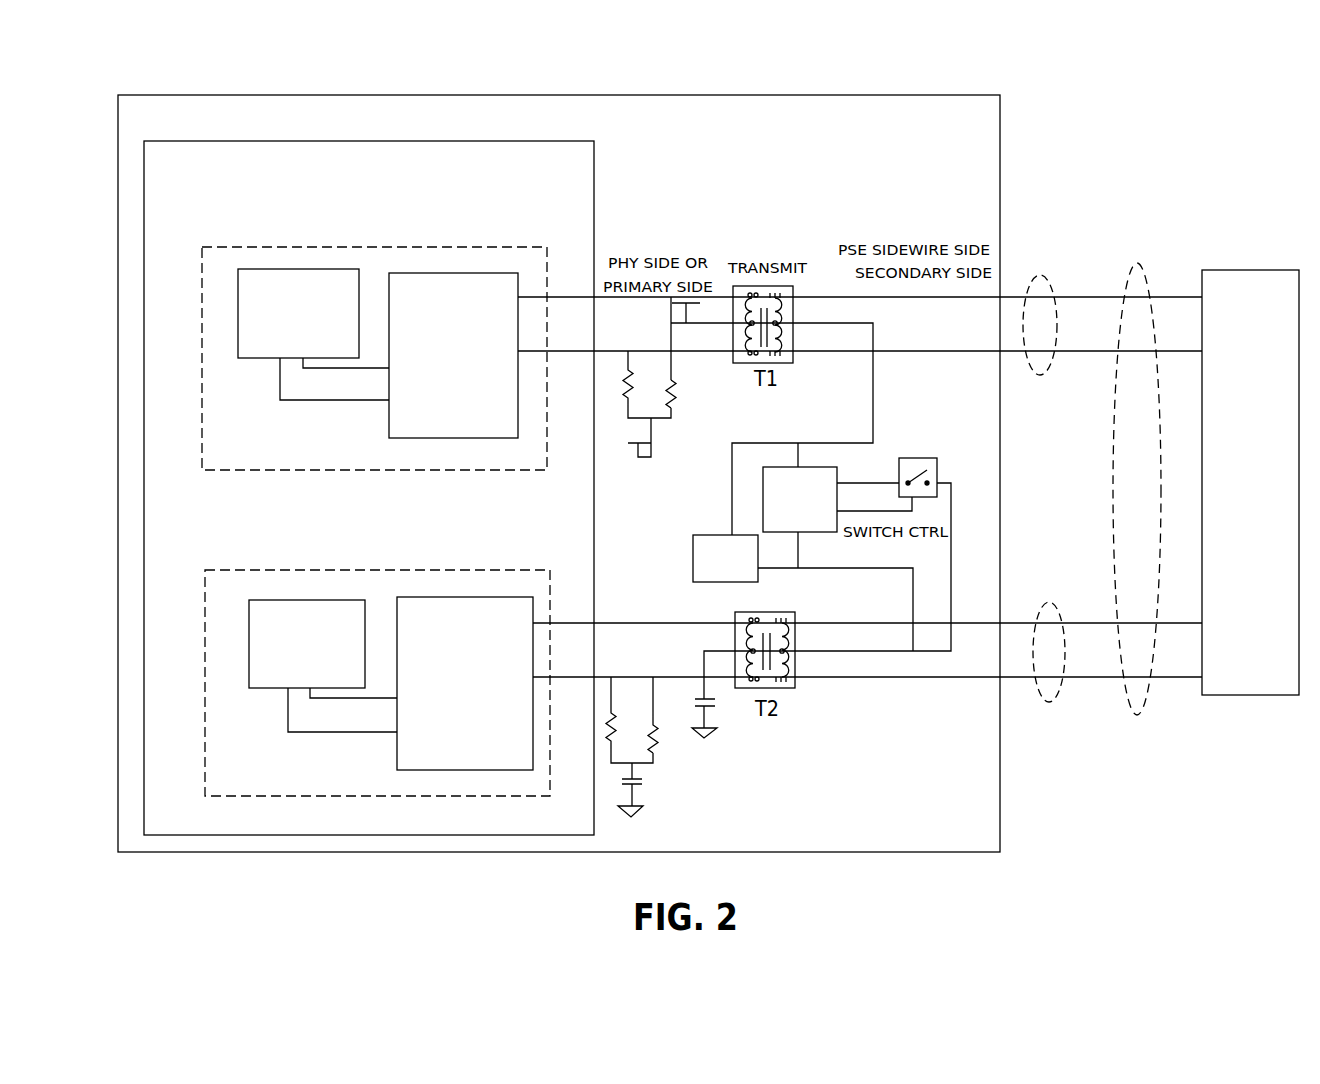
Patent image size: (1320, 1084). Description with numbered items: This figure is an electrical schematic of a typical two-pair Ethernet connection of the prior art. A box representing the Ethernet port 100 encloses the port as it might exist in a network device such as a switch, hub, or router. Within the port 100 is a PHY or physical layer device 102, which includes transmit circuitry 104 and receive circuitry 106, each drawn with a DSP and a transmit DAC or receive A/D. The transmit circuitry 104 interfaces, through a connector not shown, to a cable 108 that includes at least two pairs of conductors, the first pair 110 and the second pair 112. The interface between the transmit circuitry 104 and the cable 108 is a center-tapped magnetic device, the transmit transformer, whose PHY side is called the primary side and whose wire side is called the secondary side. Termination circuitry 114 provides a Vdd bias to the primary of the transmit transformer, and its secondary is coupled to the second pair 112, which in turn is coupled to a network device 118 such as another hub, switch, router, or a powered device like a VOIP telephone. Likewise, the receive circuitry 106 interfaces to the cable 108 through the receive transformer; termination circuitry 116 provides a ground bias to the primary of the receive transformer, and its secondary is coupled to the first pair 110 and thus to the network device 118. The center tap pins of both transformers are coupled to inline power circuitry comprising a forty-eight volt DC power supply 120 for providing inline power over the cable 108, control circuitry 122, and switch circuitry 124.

The Ethernet port 100 is at (1002, 545).
The PHY or physical layer device 102 is at (593, 176).
The transmit circuitry 104 is at (227, 473).
The receive circuitry 106 is at (317, 798).
The cable 108 is at (1137, 265).
The Pair 1-2 110 is at (1060, 693).
The Pair 3-6 112 is at (1045, 275).
The termination circuitry 114 is at (672, 422).
The termination circuitry 116 is at (655, 768).
The network device 118 is at (1269, 450).
The 48 VDC power supply 120 is at (697, 578).
The control circuitry 122 is at (833, 530).
The switch circuitry 124 is at (917, 457).